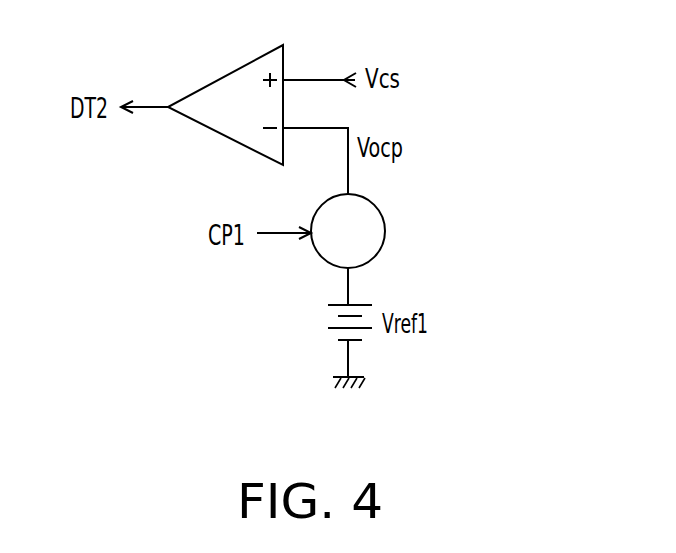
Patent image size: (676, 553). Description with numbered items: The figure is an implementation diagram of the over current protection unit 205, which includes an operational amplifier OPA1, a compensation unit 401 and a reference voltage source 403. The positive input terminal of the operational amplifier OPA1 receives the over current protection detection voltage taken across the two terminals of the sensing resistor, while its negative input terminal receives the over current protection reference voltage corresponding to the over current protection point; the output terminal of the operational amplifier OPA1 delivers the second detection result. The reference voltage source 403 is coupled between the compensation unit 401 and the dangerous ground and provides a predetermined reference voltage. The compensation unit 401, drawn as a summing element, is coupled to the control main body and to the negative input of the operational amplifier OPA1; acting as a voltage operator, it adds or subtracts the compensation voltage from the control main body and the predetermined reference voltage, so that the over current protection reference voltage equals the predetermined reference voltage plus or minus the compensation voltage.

The operational amplifier OPA1 is at (233, 70).
The compensation unit 401 is at (385, 231).
The reference voltage source 403 is at (321, 317).
The over current protection unit 205 is at (540, 413).